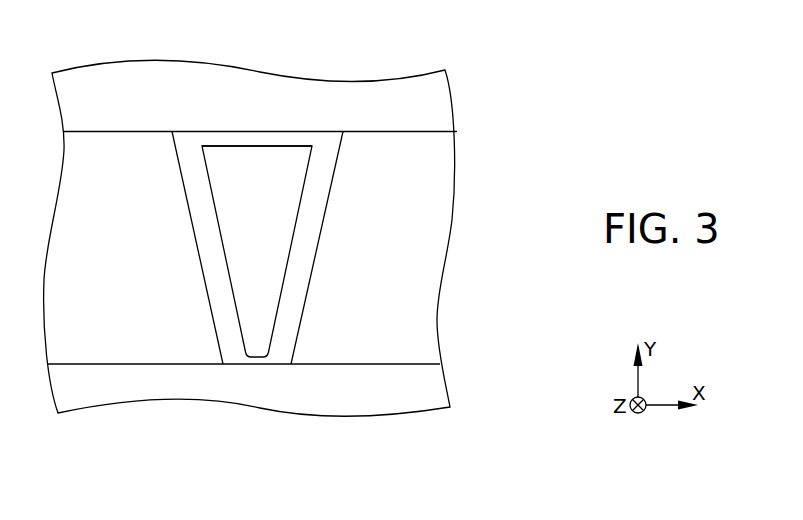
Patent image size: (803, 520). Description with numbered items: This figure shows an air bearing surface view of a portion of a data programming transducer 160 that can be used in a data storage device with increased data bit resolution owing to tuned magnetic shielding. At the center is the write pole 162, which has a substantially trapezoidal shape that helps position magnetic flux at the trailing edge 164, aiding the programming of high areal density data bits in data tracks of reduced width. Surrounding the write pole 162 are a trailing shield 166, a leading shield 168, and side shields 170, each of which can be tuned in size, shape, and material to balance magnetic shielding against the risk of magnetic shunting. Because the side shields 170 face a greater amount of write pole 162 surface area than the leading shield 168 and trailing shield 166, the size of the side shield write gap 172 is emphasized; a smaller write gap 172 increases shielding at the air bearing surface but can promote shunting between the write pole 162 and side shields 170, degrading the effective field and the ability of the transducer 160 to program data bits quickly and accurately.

The data programming transducer 160 is at (121, 43).
The write pole 162 is at (275, 216).
The trailing edge 164 is at (273, 146).
The trailing shield 166 is at (102, 390).
The leading shield 168 is at (101, 114).
The side shields 170 is at (107, 160).
The side shield write gap 172 is at (218, 217).